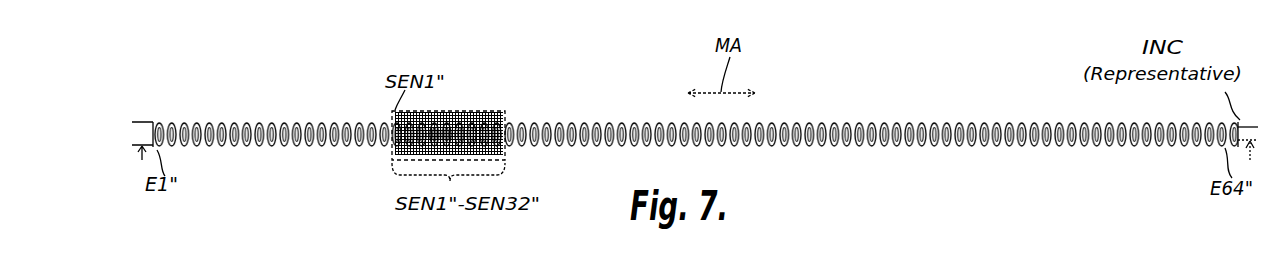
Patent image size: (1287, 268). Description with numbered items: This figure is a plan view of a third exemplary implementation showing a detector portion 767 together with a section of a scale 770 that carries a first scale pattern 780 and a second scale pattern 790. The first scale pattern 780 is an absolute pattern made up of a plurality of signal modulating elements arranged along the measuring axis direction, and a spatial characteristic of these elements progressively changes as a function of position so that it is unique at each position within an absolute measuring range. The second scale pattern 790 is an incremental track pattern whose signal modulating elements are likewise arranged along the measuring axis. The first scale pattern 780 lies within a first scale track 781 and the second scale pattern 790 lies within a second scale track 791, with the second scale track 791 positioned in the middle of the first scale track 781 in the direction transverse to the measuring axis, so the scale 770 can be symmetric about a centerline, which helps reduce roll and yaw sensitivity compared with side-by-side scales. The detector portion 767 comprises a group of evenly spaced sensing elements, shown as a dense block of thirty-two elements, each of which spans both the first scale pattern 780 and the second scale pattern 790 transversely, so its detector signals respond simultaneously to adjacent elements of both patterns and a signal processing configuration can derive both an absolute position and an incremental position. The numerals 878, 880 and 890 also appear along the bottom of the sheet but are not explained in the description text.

The scale 770 is at (1054, 45).
The first scale pattern 780 is at (124, 135).
The first scale track 781 is at (142, 122).
The detector portion 767 is at (478, 110).
The second scale pattern 790 is at (1258, 131).
The second scale track 791 is at (1250, 126).
The first segment 878 is at (397, 257).
The second segment 880 is at (630, 257).
The third segment 890 is at (868, 257).